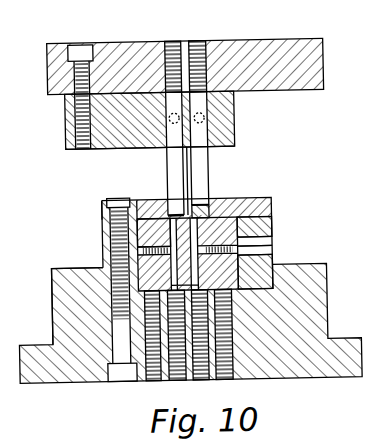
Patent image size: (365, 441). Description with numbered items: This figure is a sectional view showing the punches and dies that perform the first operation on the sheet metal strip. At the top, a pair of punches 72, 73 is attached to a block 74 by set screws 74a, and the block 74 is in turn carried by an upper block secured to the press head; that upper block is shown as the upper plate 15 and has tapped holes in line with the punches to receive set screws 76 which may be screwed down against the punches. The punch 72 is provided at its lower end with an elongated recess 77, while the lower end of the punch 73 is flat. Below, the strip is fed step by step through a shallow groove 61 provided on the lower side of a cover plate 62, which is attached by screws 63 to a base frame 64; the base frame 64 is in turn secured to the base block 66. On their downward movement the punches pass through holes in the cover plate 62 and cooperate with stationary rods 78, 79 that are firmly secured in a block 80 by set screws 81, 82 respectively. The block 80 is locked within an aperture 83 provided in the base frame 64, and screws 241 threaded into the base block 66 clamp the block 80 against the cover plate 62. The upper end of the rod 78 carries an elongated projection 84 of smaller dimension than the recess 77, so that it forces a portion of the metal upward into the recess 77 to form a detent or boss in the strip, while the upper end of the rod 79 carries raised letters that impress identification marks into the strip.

The upper die plate 15 is at (326, 62).
The set screws 76 is at (169, 72).
The block 74 is at (236, 117).
The set screws 74a is at (151, 147).
The punch 73 is at (168, 176).
The punch 72 is at (209, 172).
The elongated recess 77 is at (206, 211).
The shallow groove 61 is at (272, 205).
The cover plate 62 is at (102, 206).
The screws 63 is at (112, 198).
The base frame 64 is at (102, 226).
The stationary rod 79 is at (102, 241).
The set screw 82 is at (105, 256).
The elongated projection 84 is at (272, 224).
The stationary rod 78 is at (272, 242).
The set screw 81 is at (272, 252).
The aperture 83 is at (264, 271).
The block 80 is at (51, 282).
The base block 66 is at (50, 320).
The screws 241 is at (231, 361).